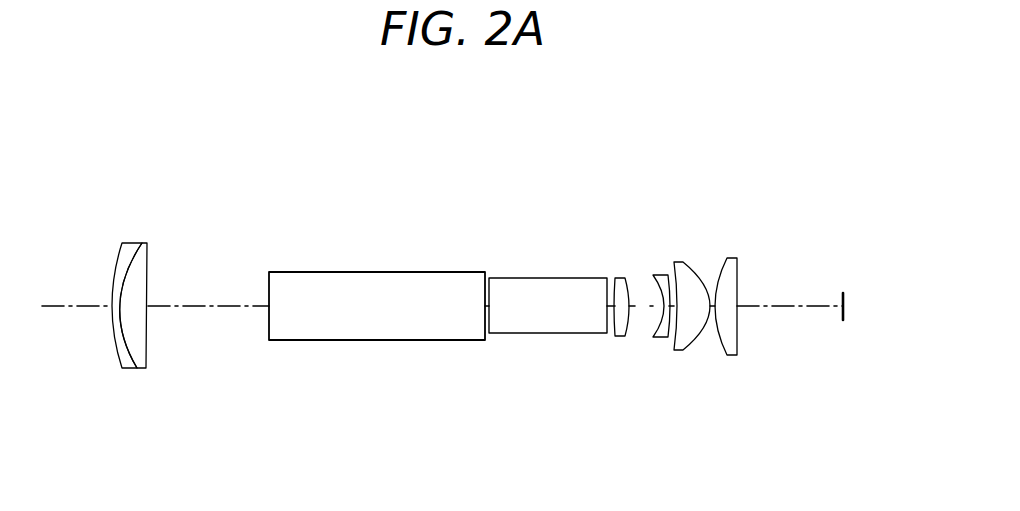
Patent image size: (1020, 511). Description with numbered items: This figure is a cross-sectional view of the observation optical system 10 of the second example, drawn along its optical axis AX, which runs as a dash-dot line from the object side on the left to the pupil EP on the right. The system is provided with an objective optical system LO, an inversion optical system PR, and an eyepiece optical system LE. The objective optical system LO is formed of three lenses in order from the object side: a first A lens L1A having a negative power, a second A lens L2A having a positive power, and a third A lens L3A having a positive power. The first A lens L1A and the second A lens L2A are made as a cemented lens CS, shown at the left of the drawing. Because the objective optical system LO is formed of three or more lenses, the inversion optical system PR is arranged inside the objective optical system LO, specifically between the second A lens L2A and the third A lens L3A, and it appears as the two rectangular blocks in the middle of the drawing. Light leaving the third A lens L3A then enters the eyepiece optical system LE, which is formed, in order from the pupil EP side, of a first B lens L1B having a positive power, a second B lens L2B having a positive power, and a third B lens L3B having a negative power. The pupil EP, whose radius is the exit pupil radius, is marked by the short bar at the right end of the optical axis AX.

The observation optical system 10 is at (647, 121).
The cemented lens CS is at (131, 256).
The first A lens L1A is at (128, 246).
The second A lens L2A is at (140, 246).
The inversion optical system PR is at (607, 352).
The third A lens L3A is at (617, 277).
The optical axis AX is at (642, 302).
The third B lens L3B is at (655, 274).
The second B lens L2B is at (678, 261).
The first B lens L1B is at (733, 257).
The eyepiece optical system LE is at (745, 373).
The pupil EP is at (840, 318).
The objective optical system LO is at (623, 398).